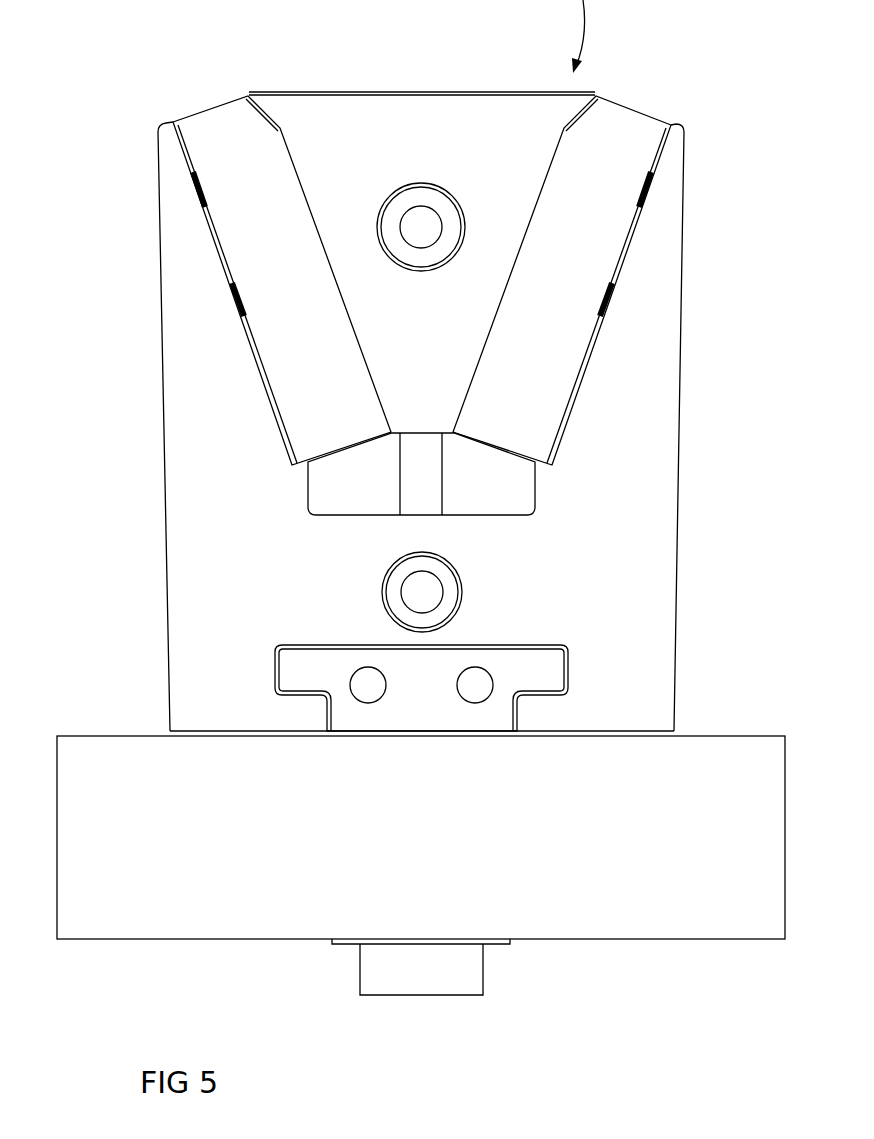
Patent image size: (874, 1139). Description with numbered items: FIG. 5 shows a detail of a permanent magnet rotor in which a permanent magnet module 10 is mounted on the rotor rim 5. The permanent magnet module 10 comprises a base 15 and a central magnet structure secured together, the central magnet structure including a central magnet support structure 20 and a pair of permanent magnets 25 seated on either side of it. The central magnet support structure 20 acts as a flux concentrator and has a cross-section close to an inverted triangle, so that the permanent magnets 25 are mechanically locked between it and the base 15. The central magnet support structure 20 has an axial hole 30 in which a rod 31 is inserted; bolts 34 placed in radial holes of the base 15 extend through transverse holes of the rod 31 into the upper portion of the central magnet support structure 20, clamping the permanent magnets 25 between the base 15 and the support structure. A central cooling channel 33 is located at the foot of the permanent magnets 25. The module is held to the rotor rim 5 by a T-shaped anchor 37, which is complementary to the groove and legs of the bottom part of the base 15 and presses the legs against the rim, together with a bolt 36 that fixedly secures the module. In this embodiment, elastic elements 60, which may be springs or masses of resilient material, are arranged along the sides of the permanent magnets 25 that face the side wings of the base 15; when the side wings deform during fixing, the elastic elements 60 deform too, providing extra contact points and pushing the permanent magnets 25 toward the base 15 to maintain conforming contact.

The rotor rim 5 is at (713, 730).
The permanent magnet module 10 is at (115, 405).
The base 15 is at (683, 330).
The central magnet support structure 20 is at (452, 92).
The first permanent magnet 25 is at (633, 108).
The axial hole 30 is at (465, 230).
The rod 31 is at (435, 211).
The central cooling channel 33 is at (316, 489).
The bolt 34 is at (437, 483).
The bolt 36 is at (483, 995).
The anchor 37 is at (528, 661).
The elastic elements 60 is at (196, 181).